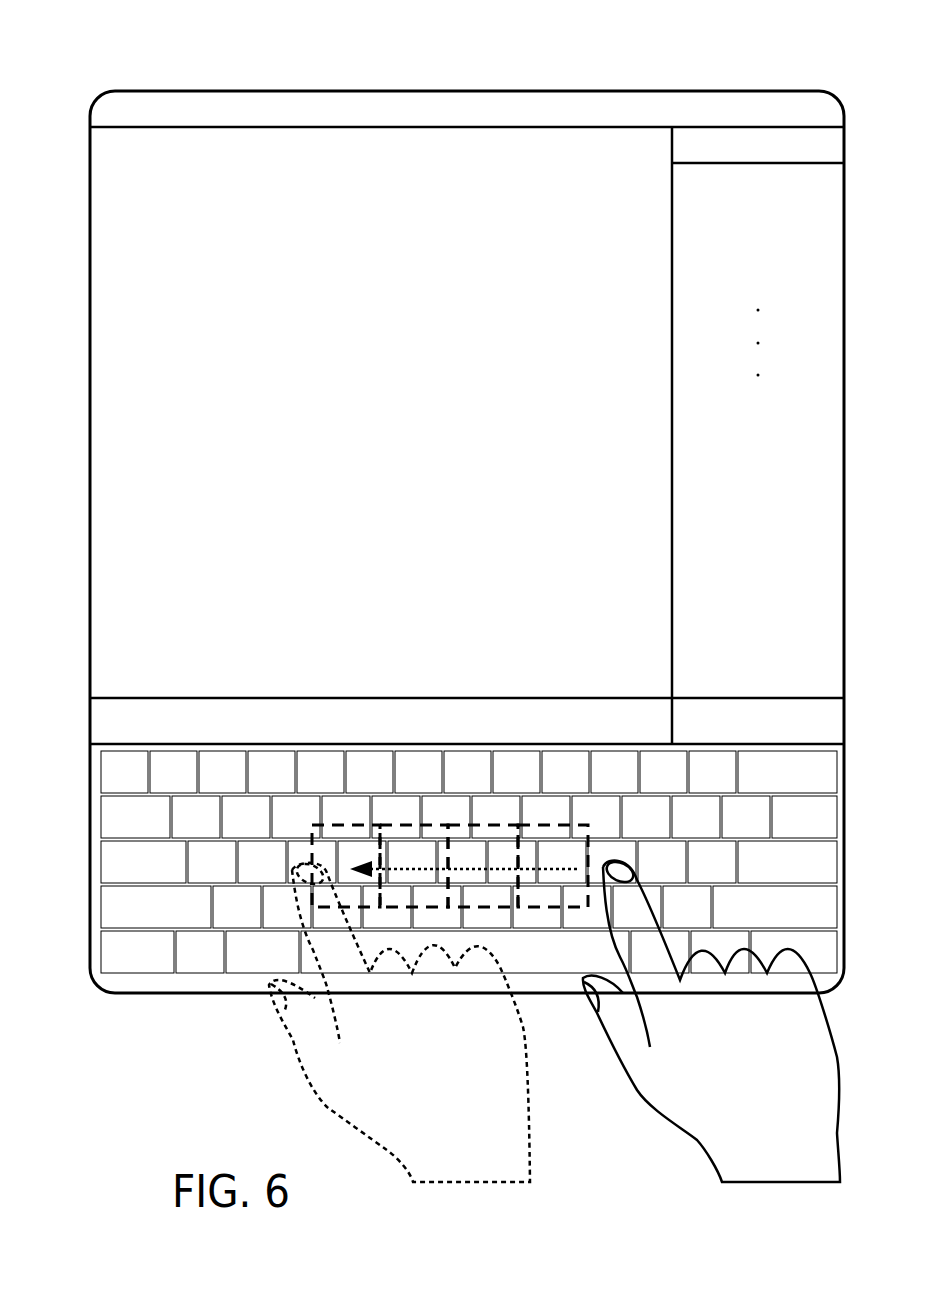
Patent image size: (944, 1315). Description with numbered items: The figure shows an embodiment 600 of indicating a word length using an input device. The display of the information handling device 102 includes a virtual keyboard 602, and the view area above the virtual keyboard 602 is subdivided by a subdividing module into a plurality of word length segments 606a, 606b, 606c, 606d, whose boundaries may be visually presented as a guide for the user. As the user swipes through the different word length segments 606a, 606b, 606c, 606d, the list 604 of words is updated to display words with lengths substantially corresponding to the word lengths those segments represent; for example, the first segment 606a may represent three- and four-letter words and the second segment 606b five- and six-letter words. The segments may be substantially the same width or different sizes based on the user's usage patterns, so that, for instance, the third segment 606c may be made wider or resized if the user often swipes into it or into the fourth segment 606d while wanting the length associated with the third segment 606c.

The embodiment of indicating a word length using an input device 600 is at (106, 74).
The information handling device 102 is at (90, 212).
The list of words 604 is at (685, 301).
The virtual keyboard 602 is at (104, 820).
The word length segment (segment 1) 606a is at (558, 832).
The word length segment (segment 2) 606b is at (490, 832).
The word length segment (segment 3) 606c is at (422, 832).
The word length segment (segment 4) 606d is at (352, 832).